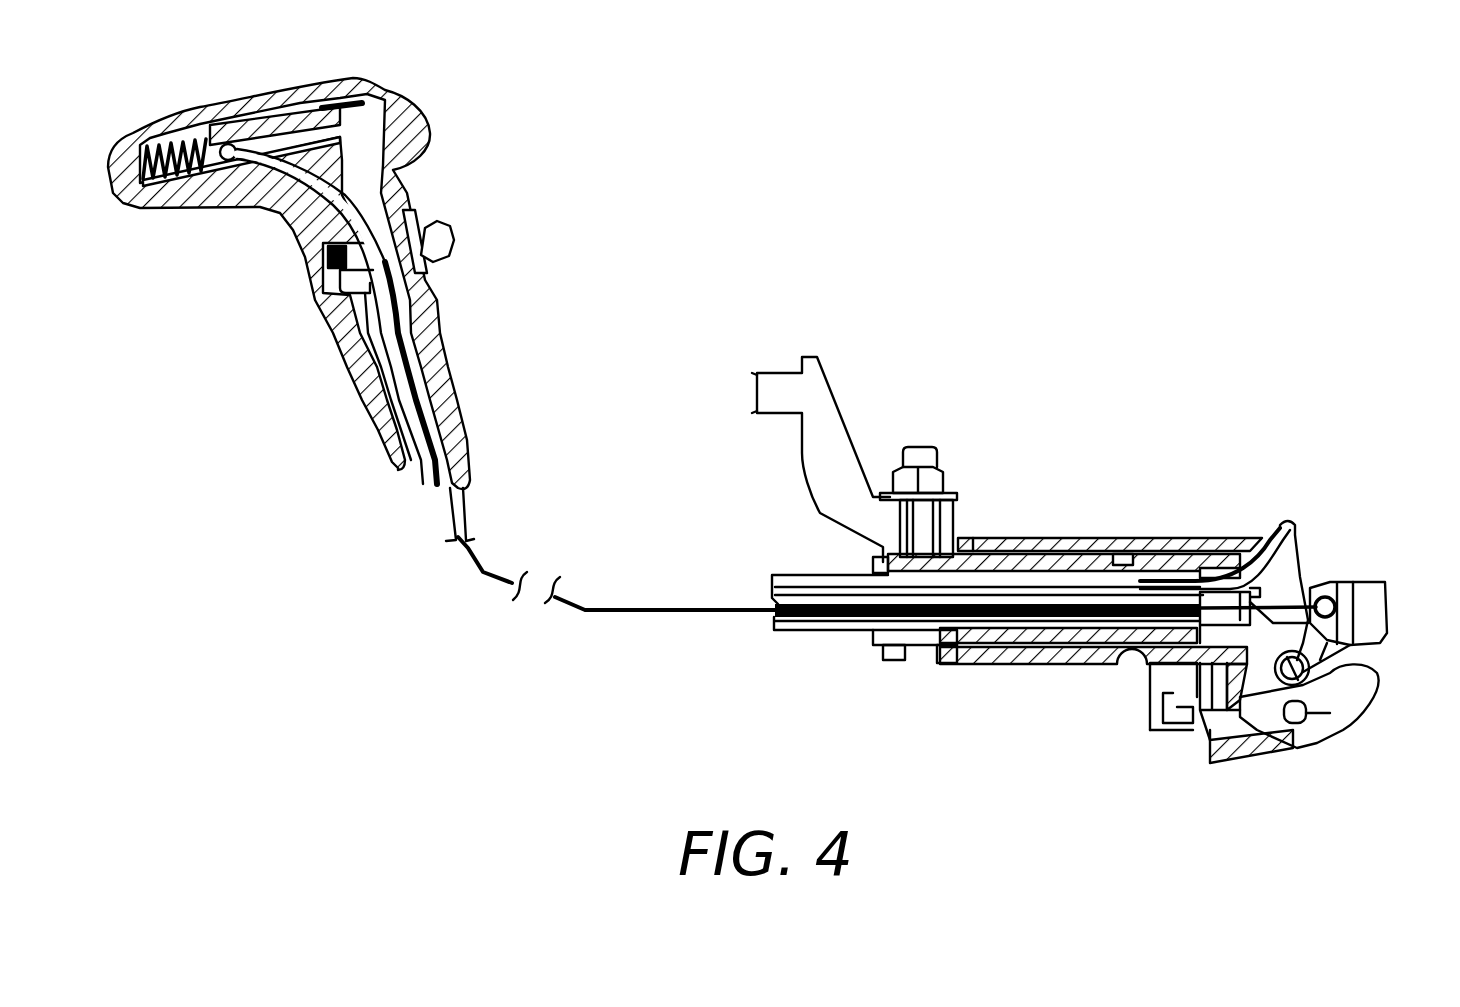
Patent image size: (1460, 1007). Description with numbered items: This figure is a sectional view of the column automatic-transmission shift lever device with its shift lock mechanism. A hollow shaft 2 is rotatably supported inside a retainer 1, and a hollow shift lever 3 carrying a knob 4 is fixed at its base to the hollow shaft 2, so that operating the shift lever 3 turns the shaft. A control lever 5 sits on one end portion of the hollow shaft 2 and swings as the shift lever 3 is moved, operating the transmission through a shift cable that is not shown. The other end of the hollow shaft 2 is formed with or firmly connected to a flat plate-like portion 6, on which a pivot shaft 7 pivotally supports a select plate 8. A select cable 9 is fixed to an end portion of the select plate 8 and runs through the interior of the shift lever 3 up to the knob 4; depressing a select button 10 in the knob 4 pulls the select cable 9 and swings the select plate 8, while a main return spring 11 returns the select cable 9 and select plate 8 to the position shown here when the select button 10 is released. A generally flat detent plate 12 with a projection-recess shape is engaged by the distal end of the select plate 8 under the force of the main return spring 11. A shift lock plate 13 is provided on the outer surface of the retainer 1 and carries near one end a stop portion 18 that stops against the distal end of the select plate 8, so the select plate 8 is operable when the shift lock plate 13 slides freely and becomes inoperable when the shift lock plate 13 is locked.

The retainer 1 is at (1070, 543).
The hollow shaft 2 is at (1008, 560).
The shift lever 3 is at (803, 622).
The knob 4 is at (438, 325).
The control lever 5 is at (820, 415).
The flat plate-like portion 6 is at (1265, 745).
The pivot shaft 7 is at (1330, 713).
The select plate 8 is at (1337, 683).
The select cable 9 is at (1295, 575).
The select button 10 is at (418, 128).
The main return spring 11 is at (1365, 660).
The detent plate 12 is at (1203, 712).
The shift lock plate 13 is at (1170, 680).
The stop portion 18 is at (1155, 717).